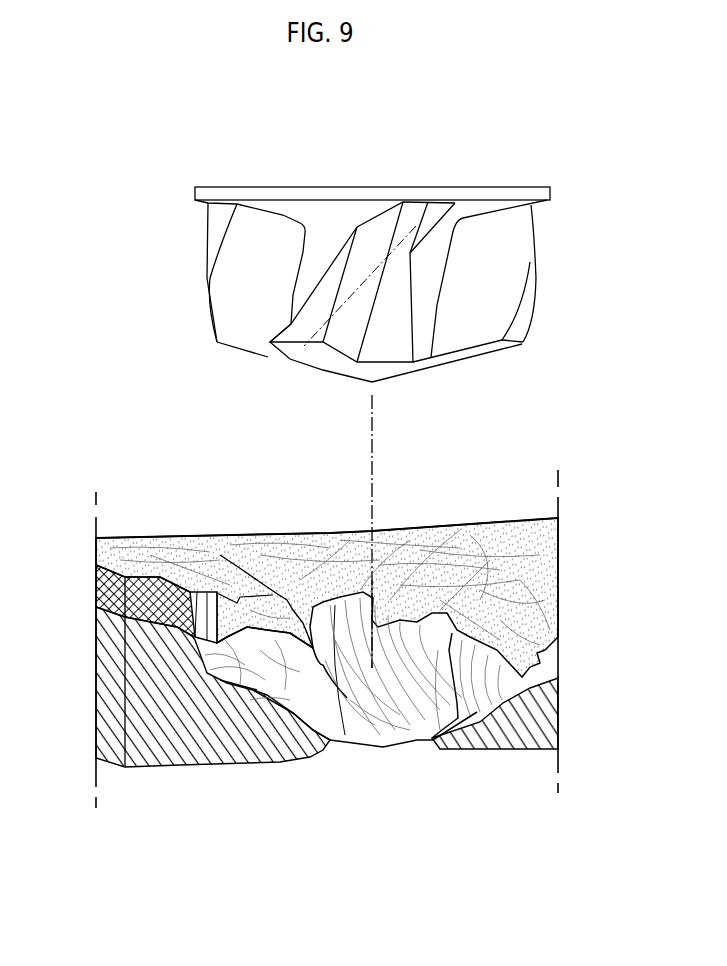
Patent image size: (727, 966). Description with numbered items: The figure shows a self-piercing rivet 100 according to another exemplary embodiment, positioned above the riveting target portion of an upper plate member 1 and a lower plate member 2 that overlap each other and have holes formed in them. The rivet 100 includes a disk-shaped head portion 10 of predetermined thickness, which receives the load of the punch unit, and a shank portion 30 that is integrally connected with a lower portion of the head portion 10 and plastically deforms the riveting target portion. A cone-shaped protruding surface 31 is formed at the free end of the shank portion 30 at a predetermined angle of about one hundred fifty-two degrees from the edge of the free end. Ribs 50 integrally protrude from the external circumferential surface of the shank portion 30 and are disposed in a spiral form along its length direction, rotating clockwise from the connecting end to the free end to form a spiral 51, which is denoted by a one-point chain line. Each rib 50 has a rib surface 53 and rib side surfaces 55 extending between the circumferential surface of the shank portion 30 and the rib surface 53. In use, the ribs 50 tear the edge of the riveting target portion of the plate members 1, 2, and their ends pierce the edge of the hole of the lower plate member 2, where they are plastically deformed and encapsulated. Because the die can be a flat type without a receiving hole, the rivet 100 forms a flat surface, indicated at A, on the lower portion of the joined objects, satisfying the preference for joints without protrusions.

The self-piercing rivet 100 is at (371, 108).
The head portion 10 is at (553, 193).
The ribs 50 is at (391, 286).
The spiral 51 is at (414, 222).
The rib surface 53 is at (375, 277).
The rib side surfaces 55 is at (507, 272).
The shank portion 30 is at (422, 316).
The protruding surface 31 is at (345, 379).
The upper plate member 1 is at (97, 585).
The lower plate member 2 is at (102, 679).
The flat surface A is at (383, 760).